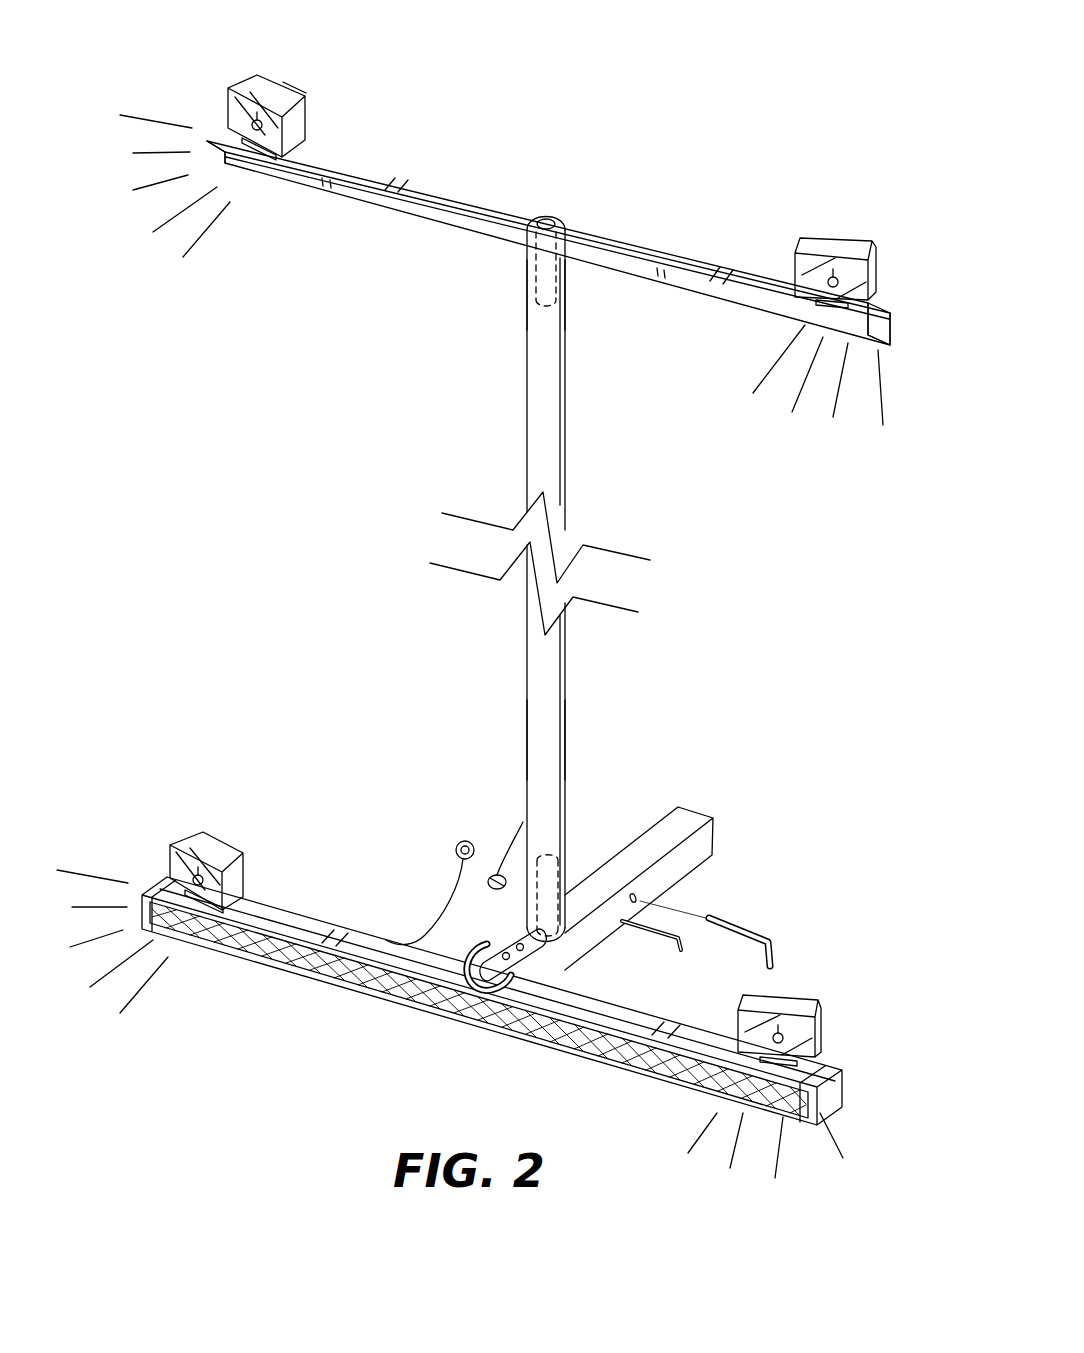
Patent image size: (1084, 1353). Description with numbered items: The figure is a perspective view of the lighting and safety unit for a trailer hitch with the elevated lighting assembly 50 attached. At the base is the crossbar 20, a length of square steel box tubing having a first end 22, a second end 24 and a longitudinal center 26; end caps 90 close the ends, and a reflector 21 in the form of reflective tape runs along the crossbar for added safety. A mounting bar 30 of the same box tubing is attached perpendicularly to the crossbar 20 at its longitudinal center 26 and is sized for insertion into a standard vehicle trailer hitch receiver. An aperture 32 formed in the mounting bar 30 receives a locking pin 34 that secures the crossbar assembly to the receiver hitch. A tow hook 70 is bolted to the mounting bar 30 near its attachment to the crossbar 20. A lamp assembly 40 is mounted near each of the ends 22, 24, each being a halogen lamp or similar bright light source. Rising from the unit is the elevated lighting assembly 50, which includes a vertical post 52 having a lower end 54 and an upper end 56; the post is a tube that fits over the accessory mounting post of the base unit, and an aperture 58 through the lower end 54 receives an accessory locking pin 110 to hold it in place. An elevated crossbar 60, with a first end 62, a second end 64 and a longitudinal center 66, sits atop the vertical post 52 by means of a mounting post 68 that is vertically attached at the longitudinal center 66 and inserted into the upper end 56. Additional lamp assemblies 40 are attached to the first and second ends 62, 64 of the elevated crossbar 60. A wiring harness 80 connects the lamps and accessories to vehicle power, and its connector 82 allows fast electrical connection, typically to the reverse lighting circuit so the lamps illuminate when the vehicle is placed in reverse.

The crossbar 20 is at (303, 917).
The reflector 21 is at (312, 975).
The first end 22 is at (200, 943).
The second end 24 is at (690, 1100).
The longitudinal center 26 is at (485, 1035).
The mounting bar 30 is at (712, 858).
The aperture 32 is at (643, 898).
The locking pin 34 is at (782, 945).
The lamp assembly 40 is at (278, 78).
The elevated lighting assembly 50 is at (758, 128).
The vertical post 52 is at (526, 458).
The lower end 54 is at (566, 778).
The upper end 56 is at (566, 330).
The aperture 58 is at (560, 846).
The elevated crossbar 60 is at (668, 243).
The first end 62 is at (212, 138).
The second end 64 is at (893, 333).
The longitudinal center 66 is at (549, 214).
The mounting post 68 is at (521, 272).
The tow hook 70 is at (470, 982).
The wiring harness 80 is at (517, 827).
The connector 82 is at (456, 850).
The end cap 90 is at (140, 913).
The accessory locking pin 110 is at (645, 940).